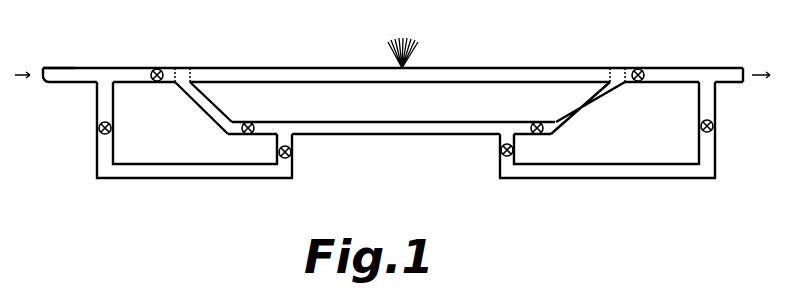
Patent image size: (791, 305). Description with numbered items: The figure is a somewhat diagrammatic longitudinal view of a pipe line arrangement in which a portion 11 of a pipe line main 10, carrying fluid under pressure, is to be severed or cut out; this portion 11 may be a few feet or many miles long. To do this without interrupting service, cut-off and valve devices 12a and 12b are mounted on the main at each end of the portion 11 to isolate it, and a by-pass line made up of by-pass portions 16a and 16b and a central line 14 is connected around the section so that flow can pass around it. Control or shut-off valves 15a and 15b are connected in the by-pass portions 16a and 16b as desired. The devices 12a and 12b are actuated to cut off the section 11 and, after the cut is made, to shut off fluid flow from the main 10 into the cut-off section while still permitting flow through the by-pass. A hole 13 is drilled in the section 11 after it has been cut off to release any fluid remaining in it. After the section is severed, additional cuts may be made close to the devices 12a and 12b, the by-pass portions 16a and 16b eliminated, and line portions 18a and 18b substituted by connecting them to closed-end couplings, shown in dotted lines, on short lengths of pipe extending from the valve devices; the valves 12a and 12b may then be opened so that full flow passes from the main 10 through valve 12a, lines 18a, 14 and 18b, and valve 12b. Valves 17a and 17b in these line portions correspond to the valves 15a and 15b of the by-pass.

The pipe line main 10 is at (83, 67).
The portion of pipe line main 11 is at (516, 67).
The cut-off and valve device 12a is at (160, 68).
The cut-off and valve device 12b is at (641, 67).
The hole 13 is at (418, 35).
The by-pass line 14 is at (404, 110).
The shut-off valve 15a is at (98, 132).
The shut-off valve 15b is at (500, 152).
The by-pass line portion 16a is at (251, 173).
The by-pass line portion 16b is at (668, 172).
The valve 17a is at (255, 123).
The valve 17b is at (542, 124).
The line portion 18a is at (188, 92).
The line portion 18b is at (586, 106).